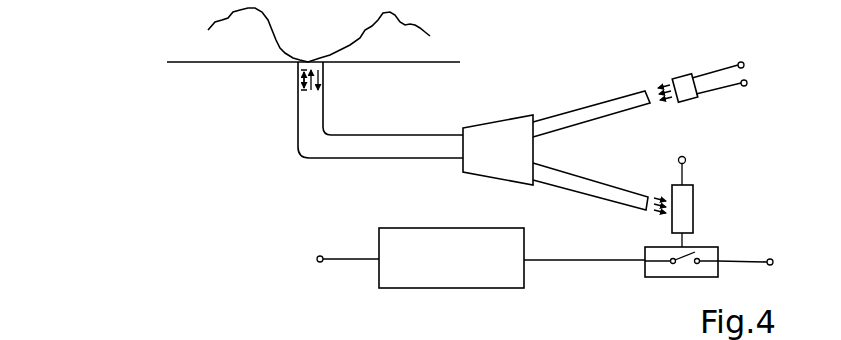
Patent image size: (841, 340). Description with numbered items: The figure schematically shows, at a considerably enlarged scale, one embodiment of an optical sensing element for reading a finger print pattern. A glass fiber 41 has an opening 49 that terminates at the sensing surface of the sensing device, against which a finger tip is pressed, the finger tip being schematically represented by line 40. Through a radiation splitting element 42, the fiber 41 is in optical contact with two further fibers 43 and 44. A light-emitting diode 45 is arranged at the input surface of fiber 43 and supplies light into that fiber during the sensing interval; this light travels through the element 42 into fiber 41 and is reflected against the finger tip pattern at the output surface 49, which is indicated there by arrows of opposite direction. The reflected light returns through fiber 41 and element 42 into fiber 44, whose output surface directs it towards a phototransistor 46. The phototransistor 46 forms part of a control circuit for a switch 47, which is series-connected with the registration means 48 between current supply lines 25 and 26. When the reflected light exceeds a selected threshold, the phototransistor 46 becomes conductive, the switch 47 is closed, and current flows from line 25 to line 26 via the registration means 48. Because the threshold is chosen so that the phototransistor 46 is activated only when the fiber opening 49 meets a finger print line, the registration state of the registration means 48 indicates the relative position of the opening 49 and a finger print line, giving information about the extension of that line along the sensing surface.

The line 40 is at (402, 21).
The fiber opening 49 is at (298, 65).
The glass fiber 41 is at (298, 135).
The radiation splitting element 42 is at (485, 128).
The fiber 43 is at (580, 110).
The fiber 44 is at (573, 190).
The light-emitting diode 45 is at (681, 77).
The phototransistor 46 is at (693, 191).
The registration means 48 is at (480, 228).
The current supply line 25 is at (321, 256).
The switch 47 is at (718, 250).
The current supply line 26 is at (772, 259).